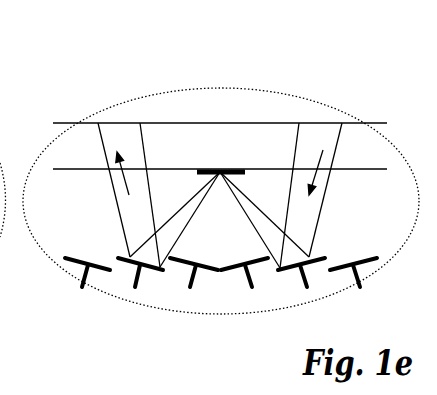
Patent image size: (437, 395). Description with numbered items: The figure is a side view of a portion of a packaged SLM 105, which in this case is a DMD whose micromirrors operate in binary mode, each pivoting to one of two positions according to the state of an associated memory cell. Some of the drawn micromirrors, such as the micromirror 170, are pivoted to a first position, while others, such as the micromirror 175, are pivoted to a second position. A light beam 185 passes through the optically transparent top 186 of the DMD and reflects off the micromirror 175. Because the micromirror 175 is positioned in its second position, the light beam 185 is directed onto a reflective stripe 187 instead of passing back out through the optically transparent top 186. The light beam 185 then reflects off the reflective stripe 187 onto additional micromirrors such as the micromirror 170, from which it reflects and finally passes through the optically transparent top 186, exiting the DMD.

The packaged SLM 105 is at (346, 43).
The micromirror 170 is at (140, 287).
The micromirror 175 is at (307, 287).
The light beam 185 is at (319, 135).
The optically transparent top 186 is at (77, 135).
The reflective stripe 187 is at (220, 172).